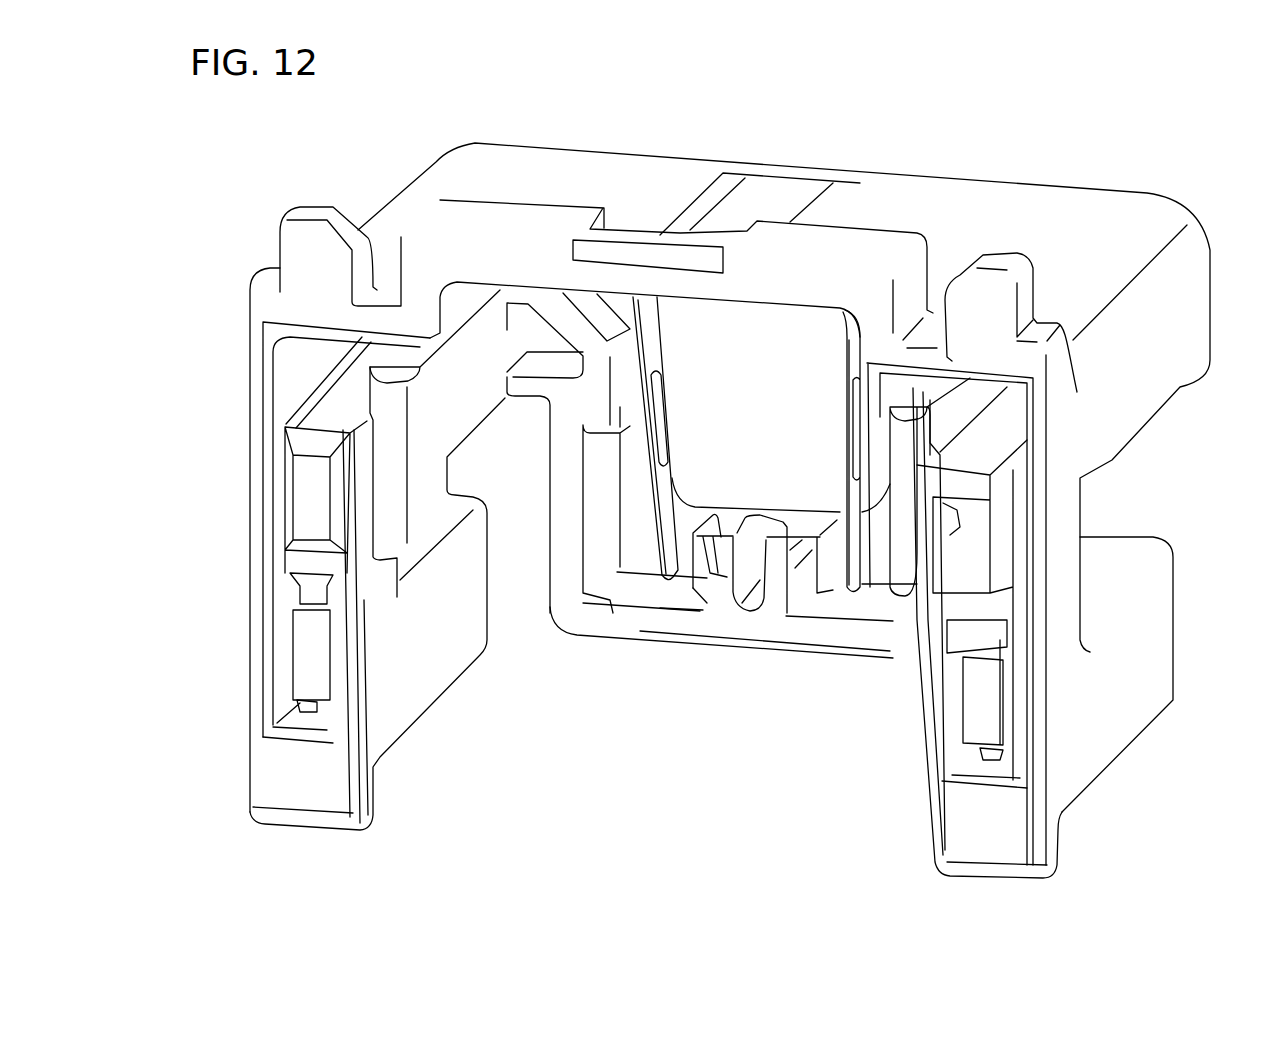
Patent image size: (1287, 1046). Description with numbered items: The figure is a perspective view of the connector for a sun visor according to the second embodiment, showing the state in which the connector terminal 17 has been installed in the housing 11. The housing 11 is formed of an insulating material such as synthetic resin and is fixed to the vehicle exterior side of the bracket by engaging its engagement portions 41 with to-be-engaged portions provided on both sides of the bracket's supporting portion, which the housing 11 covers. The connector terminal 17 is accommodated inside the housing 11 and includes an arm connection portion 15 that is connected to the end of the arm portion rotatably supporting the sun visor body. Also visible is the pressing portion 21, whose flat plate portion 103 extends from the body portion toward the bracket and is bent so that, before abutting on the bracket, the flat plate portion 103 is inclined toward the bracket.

The housing 11 is at (776, 150).
The arm connection portion 15 is at (650, 517).
The connector terminal 17 is at (682, 386).
The pressing portion 21 is at (320, 712).
The engagement portion 41 is at (305, 807).
The flat plate portion 103 is at (313, 660).